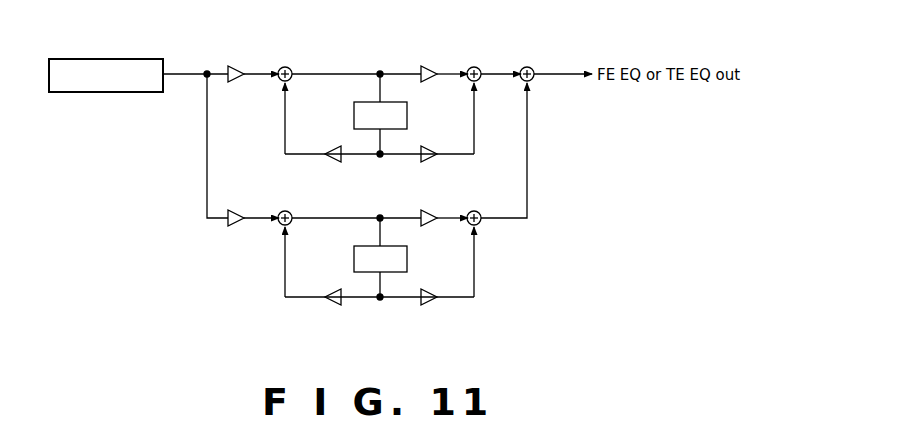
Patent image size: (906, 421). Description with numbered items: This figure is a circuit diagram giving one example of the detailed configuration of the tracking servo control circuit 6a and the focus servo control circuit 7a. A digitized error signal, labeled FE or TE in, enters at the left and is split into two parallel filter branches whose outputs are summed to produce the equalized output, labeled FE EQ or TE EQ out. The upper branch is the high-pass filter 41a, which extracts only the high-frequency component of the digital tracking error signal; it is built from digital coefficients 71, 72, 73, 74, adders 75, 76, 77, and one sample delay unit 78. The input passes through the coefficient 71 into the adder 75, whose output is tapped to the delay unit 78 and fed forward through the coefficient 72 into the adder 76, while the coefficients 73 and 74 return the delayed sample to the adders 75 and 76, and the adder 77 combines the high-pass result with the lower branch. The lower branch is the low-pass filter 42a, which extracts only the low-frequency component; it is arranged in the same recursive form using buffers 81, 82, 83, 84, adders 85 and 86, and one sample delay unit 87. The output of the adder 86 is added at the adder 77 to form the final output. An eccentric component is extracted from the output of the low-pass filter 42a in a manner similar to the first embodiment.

The tracking servo control circuit 6a is at (138, 181).
The focus servo control circuit 7a is at (188, 226).
The digital coefficient 71 is at (236, 65).
The digital coefficient 72 is at (428, 65).
The digital coefficient 73 is at (326, 149).
The digital coefficient 74 is at (428, 148).
The adder 75 is at (279, 66).
The adder 76 is at (474, 66).
The adder 77 is at (528, 66).
The one sample delay unit 78 is at (353, 114).
The high-pass filter 41a is at (440, 131).
The buffer 81 is at (237, 227).
The buffer 82 is at (431, 226).
The buffer 83 is at (327, 293).
The buffer 84 is at (430, 294).
The adder 85 is at (281, 211).
The adder 86 is at (484, 225).
The one sample delay unit 87 is at (353, 258).
The low-pass filter 42a is at (435, 275).